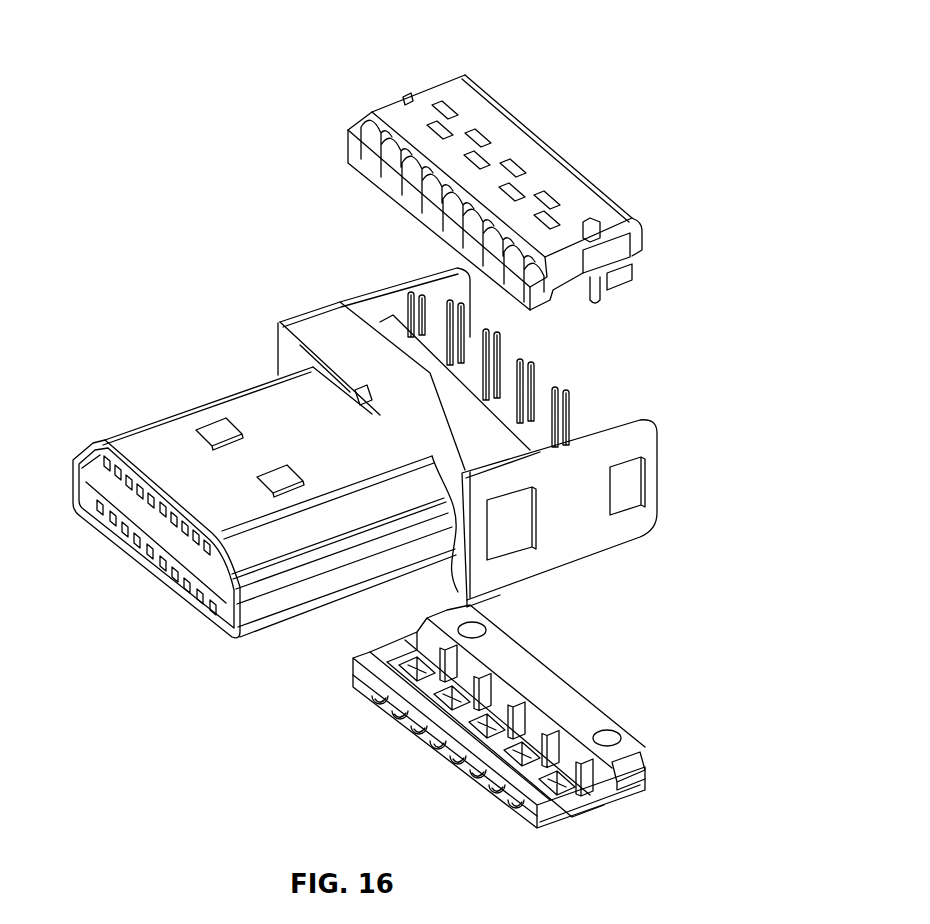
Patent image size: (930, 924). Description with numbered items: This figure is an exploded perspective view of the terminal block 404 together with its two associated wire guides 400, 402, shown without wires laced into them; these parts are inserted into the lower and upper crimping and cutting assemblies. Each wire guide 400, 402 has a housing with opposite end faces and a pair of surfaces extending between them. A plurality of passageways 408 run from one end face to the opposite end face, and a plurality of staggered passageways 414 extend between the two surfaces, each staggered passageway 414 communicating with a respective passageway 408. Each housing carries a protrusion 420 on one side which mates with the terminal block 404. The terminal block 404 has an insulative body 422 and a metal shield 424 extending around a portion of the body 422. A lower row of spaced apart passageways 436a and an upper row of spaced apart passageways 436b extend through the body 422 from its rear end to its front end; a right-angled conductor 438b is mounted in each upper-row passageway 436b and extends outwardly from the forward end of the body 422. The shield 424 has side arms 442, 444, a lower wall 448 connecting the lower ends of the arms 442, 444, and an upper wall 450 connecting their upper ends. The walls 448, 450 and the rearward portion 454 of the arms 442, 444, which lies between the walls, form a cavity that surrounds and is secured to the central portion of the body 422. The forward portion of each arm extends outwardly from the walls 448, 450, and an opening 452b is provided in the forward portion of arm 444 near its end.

The wire guide 400 is at (611, 830).
The wire guide 402 is at (488, 58).
The terminal block 404 is at (218, 338).
The passageways 408 is at (420, 207).
The staggered passageways 414 is at (481, 136).
The protrusion 420 is at (634, 291).
The insulative body 422 is at (287, 608).
The metal shield 424 is at (470, 443).
The lower row of passageways 436a is at (118, 543).
The upper row of passageways 436b is at (192, 560).
The conductor 438b is at (522, 360).
The side arm 442 is at (388, 293).
The side arm 444 is at (583, 467).
The lower wall 448 is at (498, 591).
The upper wall 450 is at (334, 355).
The opening 452b is at (630, 487).
The rearward portion 454 is at (458, 583).